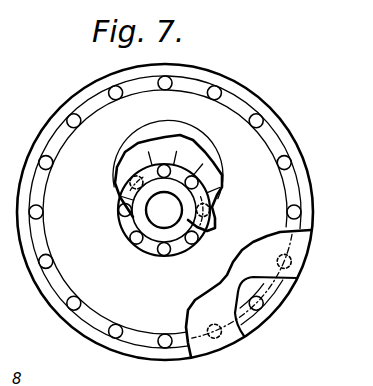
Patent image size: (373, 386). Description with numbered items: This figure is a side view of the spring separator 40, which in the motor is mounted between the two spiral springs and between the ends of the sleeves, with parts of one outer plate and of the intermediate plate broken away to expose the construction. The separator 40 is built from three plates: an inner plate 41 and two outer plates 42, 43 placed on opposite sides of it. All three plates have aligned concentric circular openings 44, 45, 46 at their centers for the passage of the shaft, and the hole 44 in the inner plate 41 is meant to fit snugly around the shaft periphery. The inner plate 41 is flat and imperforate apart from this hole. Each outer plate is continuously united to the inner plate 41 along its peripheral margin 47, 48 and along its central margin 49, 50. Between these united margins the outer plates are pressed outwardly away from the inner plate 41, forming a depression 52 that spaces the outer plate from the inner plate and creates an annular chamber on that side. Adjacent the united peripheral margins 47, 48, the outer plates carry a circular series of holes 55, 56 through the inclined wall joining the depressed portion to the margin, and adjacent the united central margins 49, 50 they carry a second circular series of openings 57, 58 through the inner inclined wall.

The spring separator 40 is at (312, 174).
The inner plate 41 is at (221, 190).
The outer plate 42 is at (201, 286).
The outer plate 43 is at (257, 283).
The circular opening 44 is at (119, 223).
The circular opening 45 is at (158, 223).
The circular opening 46 is at (190, 158).
The peripheral margin 47 is at (91, 329).
The peripheral margin 48 is at (252, 323).
The central margin 49 is at (178, 232).
The central margin 50 is at (177, 193).
The depression 52 is at (182, 156).
The openings 55 is at (288, 157).
The openings 56 is at (292, 259).
The openings 57 is at (118, 209).
The openings 58 is at (137, 182).